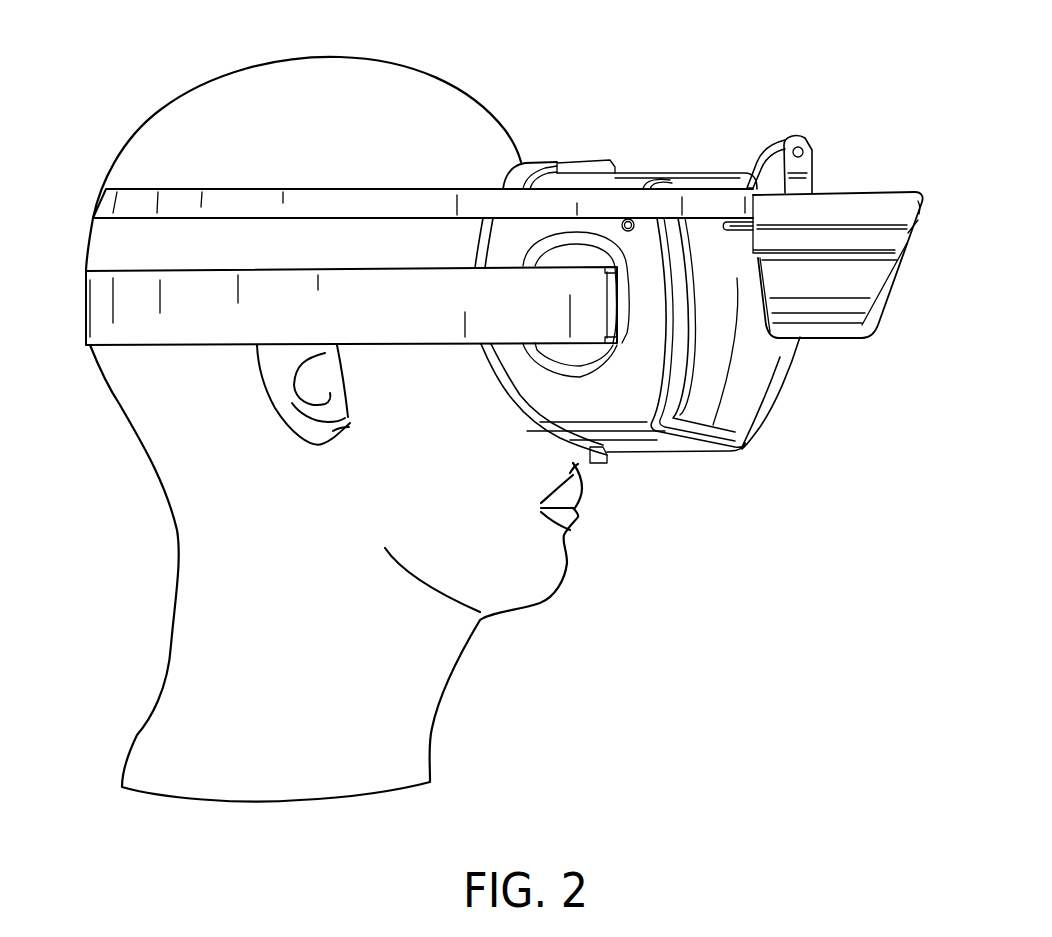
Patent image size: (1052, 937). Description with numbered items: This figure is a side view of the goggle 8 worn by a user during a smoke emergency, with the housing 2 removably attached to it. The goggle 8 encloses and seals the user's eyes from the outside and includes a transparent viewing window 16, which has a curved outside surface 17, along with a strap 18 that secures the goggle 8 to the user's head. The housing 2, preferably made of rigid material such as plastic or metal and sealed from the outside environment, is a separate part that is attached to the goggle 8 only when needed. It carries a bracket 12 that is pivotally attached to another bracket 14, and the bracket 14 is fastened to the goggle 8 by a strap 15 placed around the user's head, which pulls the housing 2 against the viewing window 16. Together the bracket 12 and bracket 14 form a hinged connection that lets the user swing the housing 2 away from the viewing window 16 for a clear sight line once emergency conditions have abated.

The housing 2 is at (890, 172).
The goggle 8 is at (636, 171).
The bracket 12 is at (814, 170).
The bracket 14 is at (770, 178).
The strap 15 is at (97, 200).
The transparent viewing window 16 is at (733, 420).
The curved outside surface 17 is at (790, 370).
The strap 18 is at (125, 325).